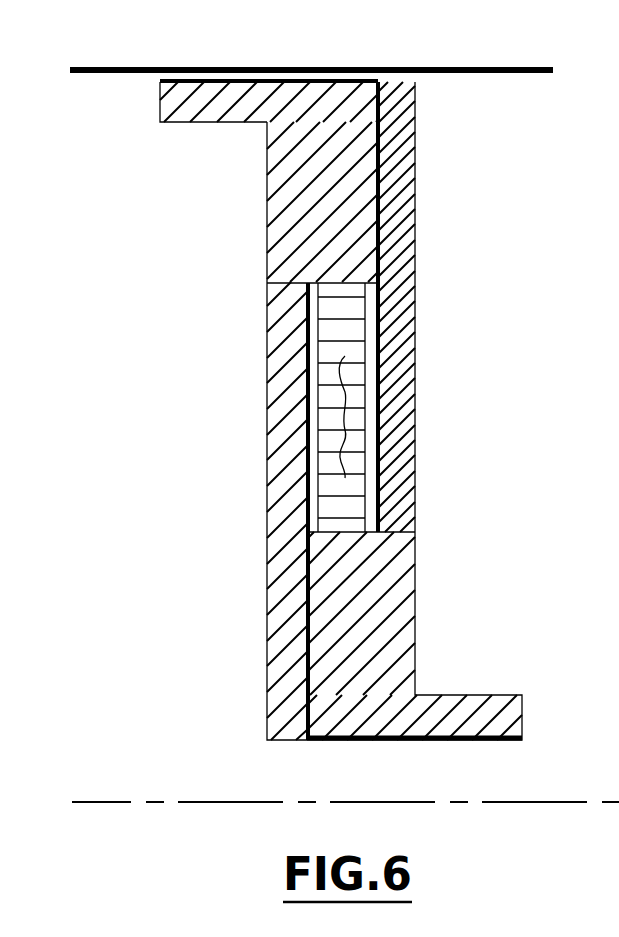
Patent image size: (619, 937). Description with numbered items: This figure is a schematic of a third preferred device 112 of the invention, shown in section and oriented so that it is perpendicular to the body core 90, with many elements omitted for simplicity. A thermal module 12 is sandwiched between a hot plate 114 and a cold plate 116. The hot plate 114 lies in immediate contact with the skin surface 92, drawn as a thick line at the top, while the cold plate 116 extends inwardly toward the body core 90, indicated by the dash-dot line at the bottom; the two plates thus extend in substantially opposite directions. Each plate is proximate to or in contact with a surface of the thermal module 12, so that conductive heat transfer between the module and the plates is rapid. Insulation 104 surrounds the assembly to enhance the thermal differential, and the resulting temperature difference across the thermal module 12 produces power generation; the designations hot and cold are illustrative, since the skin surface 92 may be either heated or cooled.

The skin surface 92 is at (447, 67).
The device 112 is at (473, 352).
The hot plate 114 is at (160, 87).
The insulation 104 is at (283, 200).
The thermal module 12 is at (318, 408).
The cold plate 116 is at (490, 741).
The core 90 is at (200, 802).